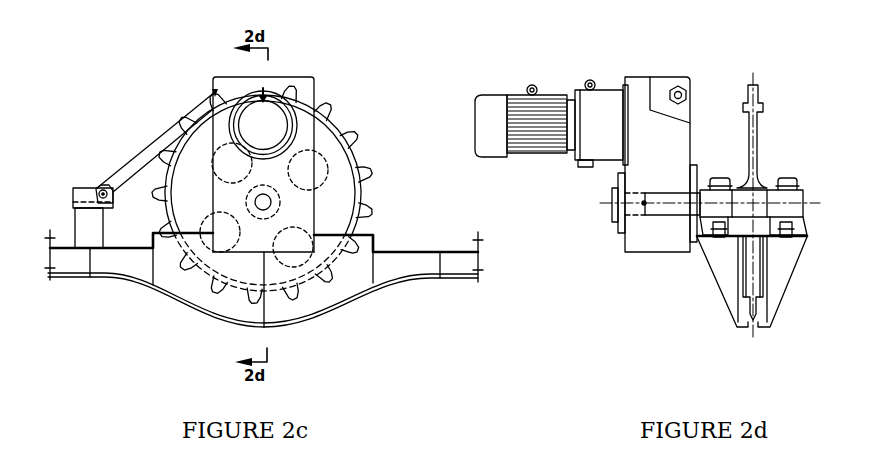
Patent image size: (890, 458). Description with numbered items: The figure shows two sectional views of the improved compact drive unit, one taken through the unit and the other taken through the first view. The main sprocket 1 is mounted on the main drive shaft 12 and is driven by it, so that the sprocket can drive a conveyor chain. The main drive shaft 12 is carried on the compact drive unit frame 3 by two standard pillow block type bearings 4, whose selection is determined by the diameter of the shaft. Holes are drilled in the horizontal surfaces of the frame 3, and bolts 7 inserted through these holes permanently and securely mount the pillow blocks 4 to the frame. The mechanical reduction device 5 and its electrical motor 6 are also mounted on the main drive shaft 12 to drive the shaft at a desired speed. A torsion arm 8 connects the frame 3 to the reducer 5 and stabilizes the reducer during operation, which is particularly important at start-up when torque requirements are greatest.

In FIG. 2C, the main sprocket 1 is at (348, 136).
In FIG. 2D, the main sprocket 1 is at (771, 96).
In FIG. 2C, the compact drive unit frame 3 is at (360, 304).
In FIG. 2D, the compact drive unit frame 3 is at (772, 293).
In FIG. 2D, the pillow block type bearings 4 is at (794, 173).
In FIG. 2D, the mechanical reduction device 5 is at (643, 72).
In FIG. 2D, the electrical motor 6 is at (506, 88).
In FIG. 2D, the bolts 7 is at (779, 242).
In FIG. 2C, the torsion arm 8 is at (138, 146).
In FIG. 2D, the main drive shaft 12 is at (658, 219).